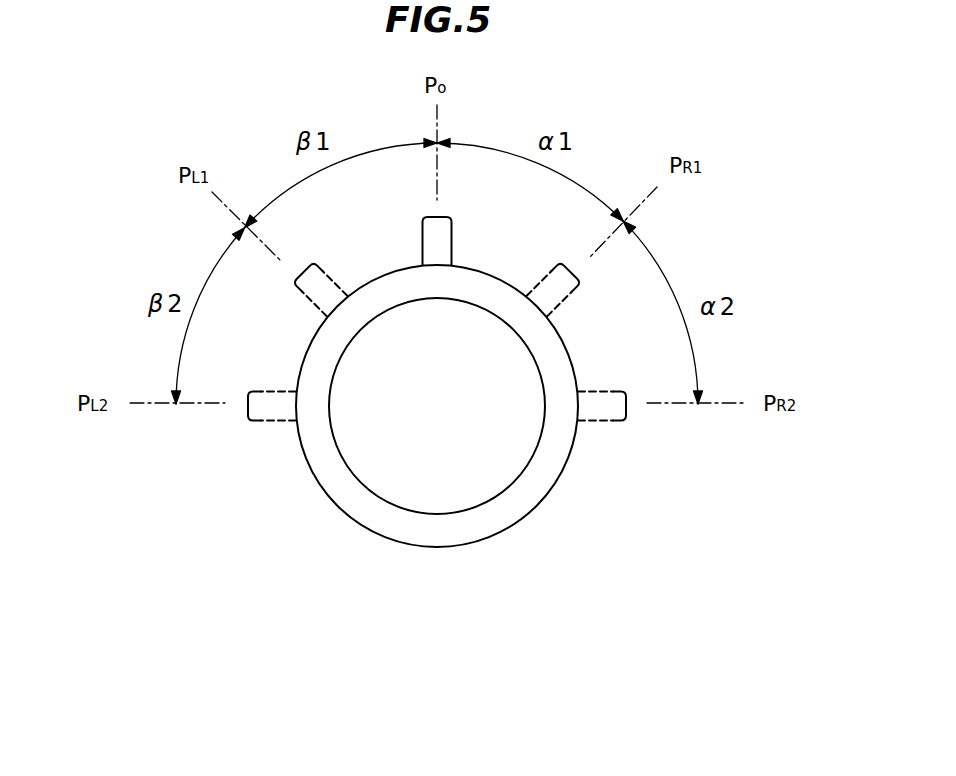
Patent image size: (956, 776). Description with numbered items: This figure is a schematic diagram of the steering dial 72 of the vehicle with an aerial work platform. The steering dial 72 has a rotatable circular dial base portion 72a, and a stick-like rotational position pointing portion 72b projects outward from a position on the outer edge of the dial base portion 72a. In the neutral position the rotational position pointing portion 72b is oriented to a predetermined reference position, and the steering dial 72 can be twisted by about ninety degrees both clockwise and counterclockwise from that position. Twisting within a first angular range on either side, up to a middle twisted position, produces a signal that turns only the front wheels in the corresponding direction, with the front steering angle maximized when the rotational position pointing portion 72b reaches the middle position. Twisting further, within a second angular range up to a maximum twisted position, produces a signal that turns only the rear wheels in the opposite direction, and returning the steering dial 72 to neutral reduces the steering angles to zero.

The steering dial 72 is at (439, 389).
The dial base portion 72a is at (477, 544).
The rotational position pointing portion 72b is at (453, 233).